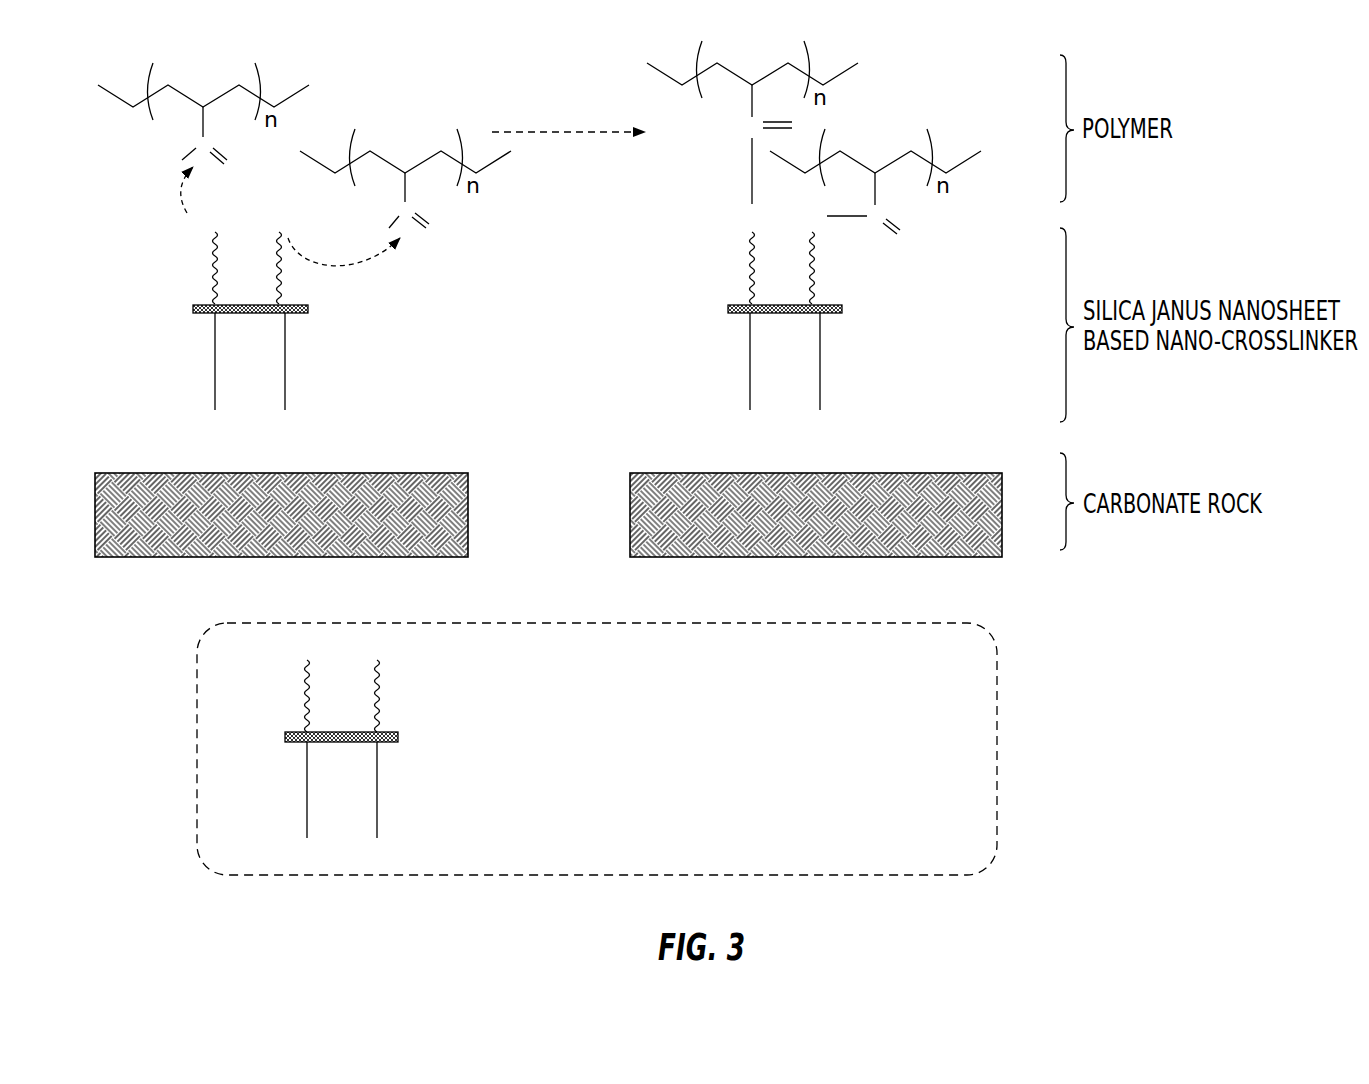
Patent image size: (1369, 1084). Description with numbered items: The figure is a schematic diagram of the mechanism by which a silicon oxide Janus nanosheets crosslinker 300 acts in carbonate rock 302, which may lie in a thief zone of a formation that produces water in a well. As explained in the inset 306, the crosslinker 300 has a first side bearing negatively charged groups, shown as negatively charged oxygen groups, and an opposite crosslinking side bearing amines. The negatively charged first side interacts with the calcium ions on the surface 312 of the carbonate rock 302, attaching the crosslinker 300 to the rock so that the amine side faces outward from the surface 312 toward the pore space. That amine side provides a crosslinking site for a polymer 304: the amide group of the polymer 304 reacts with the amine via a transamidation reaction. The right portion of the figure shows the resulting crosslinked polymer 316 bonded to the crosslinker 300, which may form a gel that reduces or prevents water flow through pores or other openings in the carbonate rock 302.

The silicon oxide Janus nanosheets crosslinker 300 is at (182, 250).
The carbonate rock 302 is at (123, 557).
The polymer 304 is at (138, 142).
The inset 306 is at (278, 623).
The surface of the carbonate rock 312 is at (443, 473).
The crosslinked polymer 316 is at (920, 90).